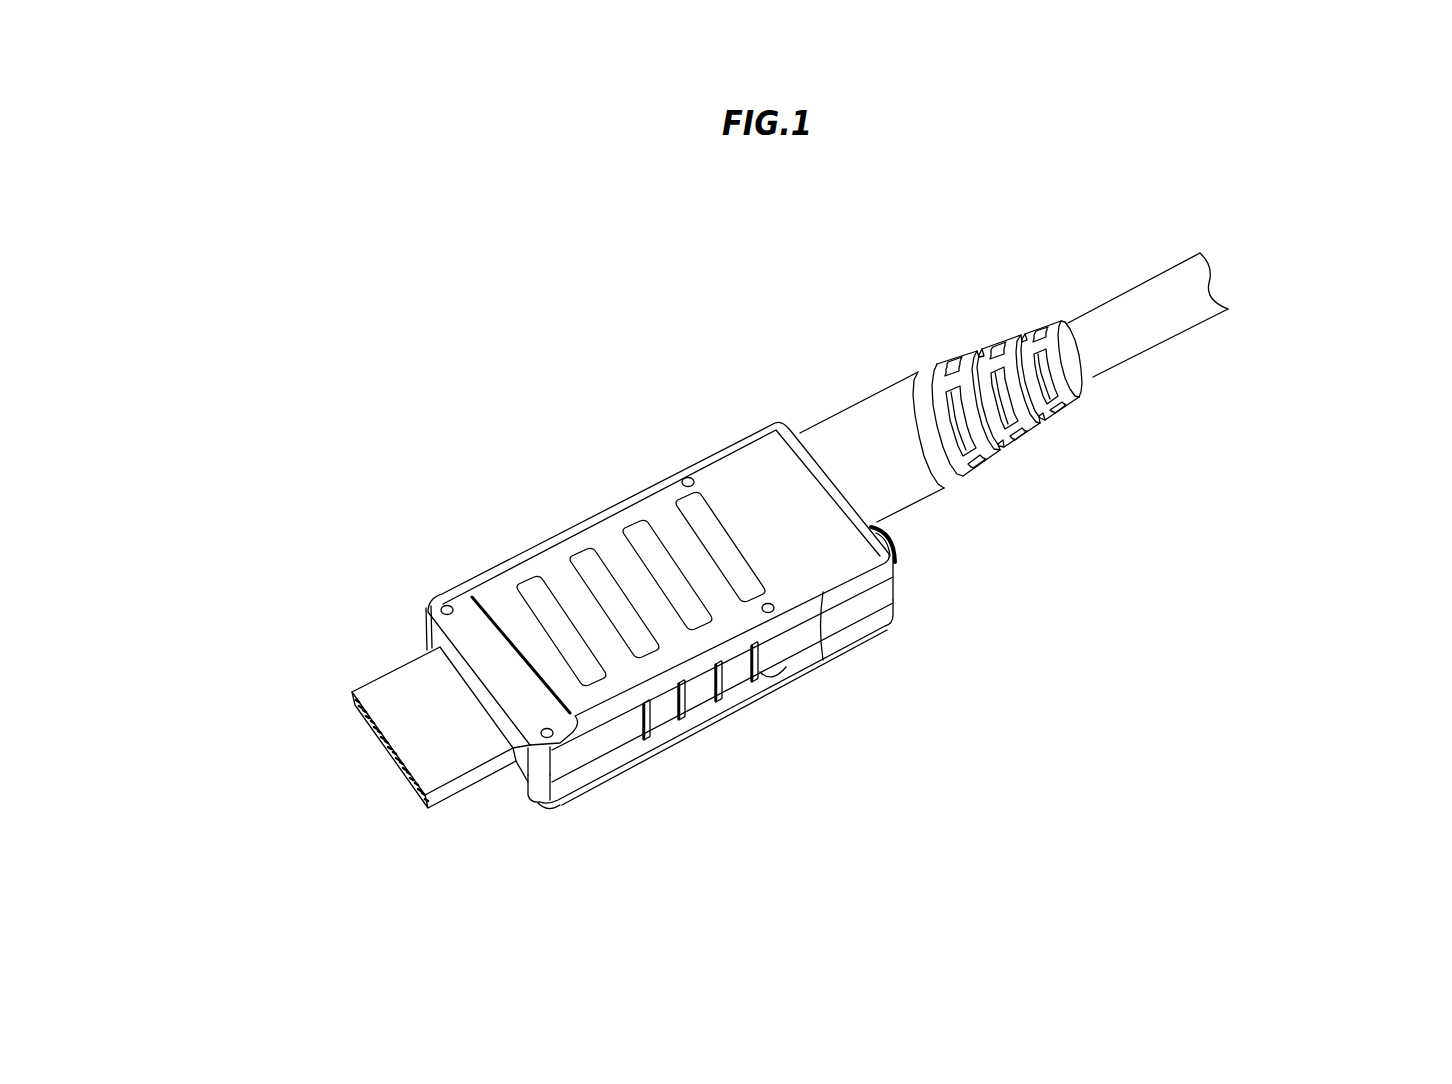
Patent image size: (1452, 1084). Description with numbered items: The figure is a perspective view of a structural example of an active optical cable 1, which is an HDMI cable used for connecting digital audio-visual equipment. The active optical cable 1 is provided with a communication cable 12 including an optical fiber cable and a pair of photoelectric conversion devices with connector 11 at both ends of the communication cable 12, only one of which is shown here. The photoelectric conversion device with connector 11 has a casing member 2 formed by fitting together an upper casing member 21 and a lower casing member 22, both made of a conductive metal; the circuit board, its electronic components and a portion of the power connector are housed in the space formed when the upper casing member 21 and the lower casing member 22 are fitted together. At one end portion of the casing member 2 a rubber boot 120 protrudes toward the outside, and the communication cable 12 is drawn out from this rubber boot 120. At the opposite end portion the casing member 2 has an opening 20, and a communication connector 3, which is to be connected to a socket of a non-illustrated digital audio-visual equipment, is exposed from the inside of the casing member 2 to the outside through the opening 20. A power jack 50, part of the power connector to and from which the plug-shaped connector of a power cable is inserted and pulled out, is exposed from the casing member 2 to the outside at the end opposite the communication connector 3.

The active optical cable 1 is at (506, 303).
The photoelectric conversion device with connector 11 is at (559, 458).
The communication cable 12 is at (1178, 327).
The rubber boot 120 is at (988, 353).
The casing member 2 is at (1143, 598).
The upper casing member 21 is at (870, 598).
The lower casing member 22 is at (860, 627).
The communication connector 3 is at (405, 678).
The opening 20 is at (515, 773).
The power jack 50 is at (900, 547).